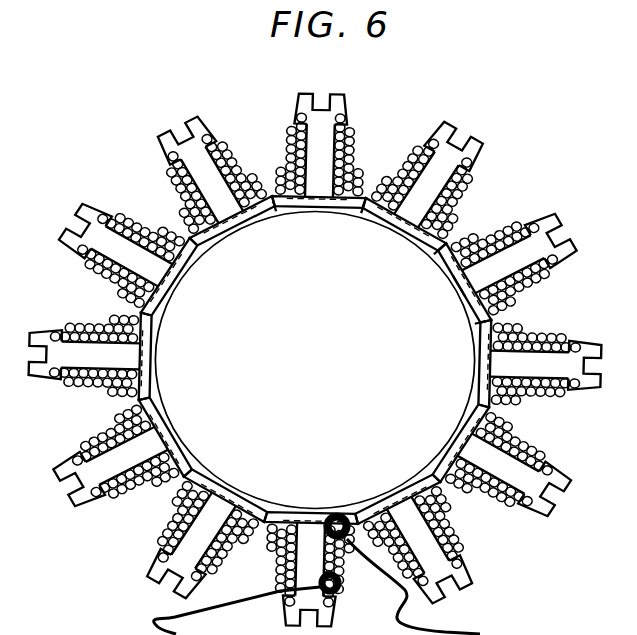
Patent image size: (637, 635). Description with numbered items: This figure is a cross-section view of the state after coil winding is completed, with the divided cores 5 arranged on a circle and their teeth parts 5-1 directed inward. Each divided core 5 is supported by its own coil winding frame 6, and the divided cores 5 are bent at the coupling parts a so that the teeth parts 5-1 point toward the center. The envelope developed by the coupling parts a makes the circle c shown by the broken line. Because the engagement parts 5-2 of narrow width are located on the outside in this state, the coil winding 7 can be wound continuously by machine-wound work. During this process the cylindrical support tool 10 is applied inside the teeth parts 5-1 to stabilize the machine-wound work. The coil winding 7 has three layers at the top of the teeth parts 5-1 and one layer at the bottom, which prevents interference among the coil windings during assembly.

The coil winding frame 6 is at (315, 360).
The divided core 5 is at (424, 174).
The teeth part 5-1 is at (390, 228).
The engagement part 5-2 is at (458, 130).
The coil winding 7 is at (458, 192).
The cylindrical support tool 10 is at (435, 262).
The coupling part a is at (273, 197).
The circle c is at (460, 293).